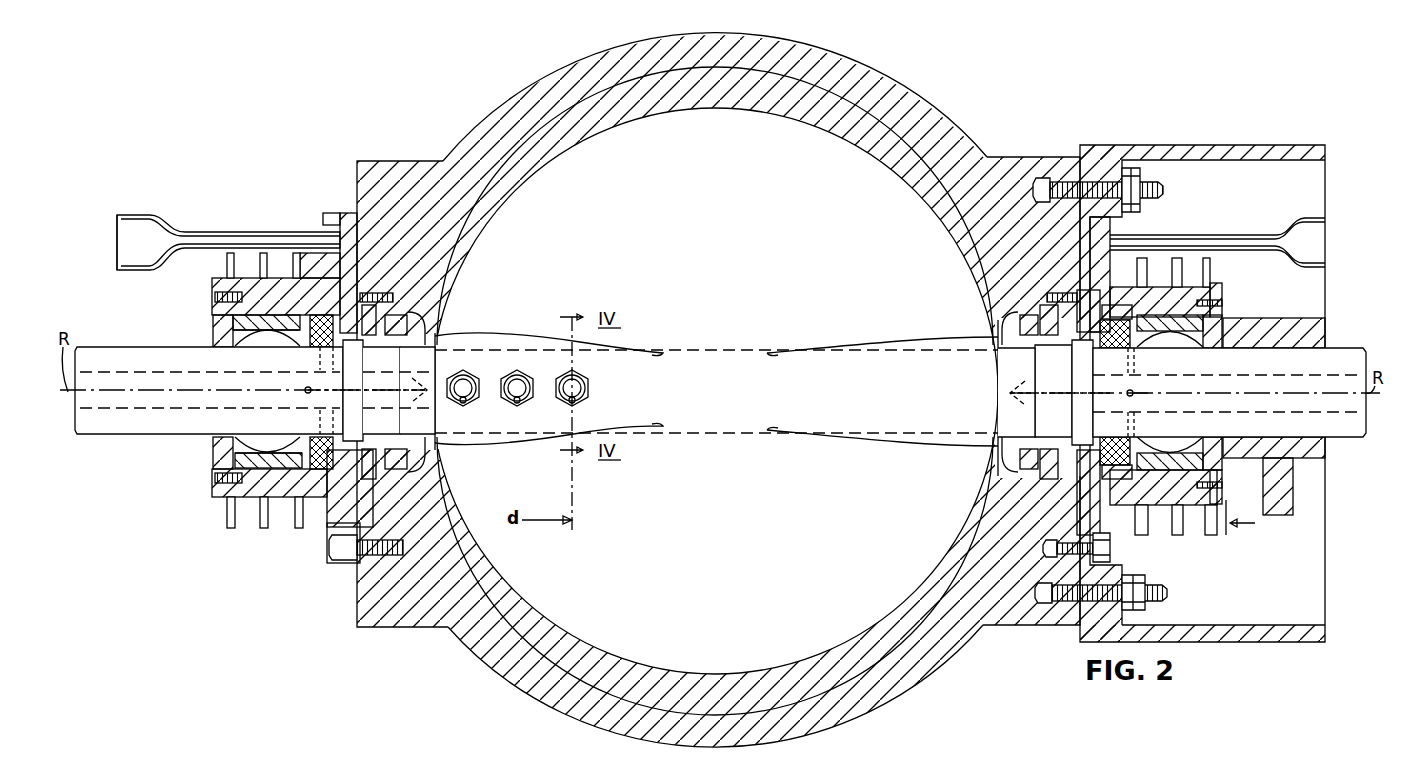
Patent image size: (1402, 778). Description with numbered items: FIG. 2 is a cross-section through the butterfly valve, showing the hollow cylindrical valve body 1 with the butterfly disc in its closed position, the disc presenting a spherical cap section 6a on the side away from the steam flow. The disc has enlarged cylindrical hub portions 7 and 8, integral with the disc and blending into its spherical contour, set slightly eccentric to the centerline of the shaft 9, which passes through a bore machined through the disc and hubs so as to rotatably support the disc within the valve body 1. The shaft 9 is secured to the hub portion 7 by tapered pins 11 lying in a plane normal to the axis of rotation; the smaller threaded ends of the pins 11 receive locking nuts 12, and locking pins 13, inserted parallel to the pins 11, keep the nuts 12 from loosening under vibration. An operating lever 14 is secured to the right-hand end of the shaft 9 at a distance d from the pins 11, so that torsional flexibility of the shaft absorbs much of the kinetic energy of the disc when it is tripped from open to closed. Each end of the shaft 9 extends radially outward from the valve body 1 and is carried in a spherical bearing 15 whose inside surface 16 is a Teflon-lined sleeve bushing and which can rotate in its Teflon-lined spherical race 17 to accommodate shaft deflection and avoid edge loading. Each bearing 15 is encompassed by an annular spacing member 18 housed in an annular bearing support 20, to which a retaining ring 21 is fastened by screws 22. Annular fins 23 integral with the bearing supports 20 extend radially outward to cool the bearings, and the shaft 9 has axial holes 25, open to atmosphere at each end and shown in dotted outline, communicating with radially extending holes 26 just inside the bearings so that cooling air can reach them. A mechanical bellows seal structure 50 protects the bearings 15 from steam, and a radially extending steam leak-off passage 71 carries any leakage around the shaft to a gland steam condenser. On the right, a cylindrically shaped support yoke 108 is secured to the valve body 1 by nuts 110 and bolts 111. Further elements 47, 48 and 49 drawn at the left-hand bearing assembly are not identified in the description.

The valve body 1 is at (530, 682).
The spherical cap section 6a is at (700, 653).
The hub portion 7 is at (508, 430).
The hub portion 8 is at (887, 425).
The shaft 9 is at (150, 425).
The tapered pins 11 is at (512, 373).
The locking nut 12 is at (470, 372).
The locking pins 13 is at (461, 403).
The operating lever 14 is at (1300, 322).
The spherical bearings 15 is at (1188, 468).
The inside bearing surface 16 is at (1185, 437).
The spherical race 17 is at (1162, 468).
The annular spacing member 18 is at (1130, 470).
The annular bearing support 20 is at (1077, 505).
The retaining ring 21 is at (1218, 292).
The screws 22 is at (1222, 303).
The annular fins 23 is at (1120, 287).
The axial holes 25 is at (110, 400).
The radially extending holes 26 is at (1133, 360).
The bearing 47 is at (262, 320).
The bearing inner race 48 is at (289, 283).
The cooling fins housing 49 is at (226, 265).
The mechanical bellows seal structure 50 is at (372, 296).
The steam leak-off passage 71 is at (153, 215).
The support yoke 108 is at (1262, 135).
The nuts 110 is at (1140, 200).
The bolts 111 is at (1050, 182).